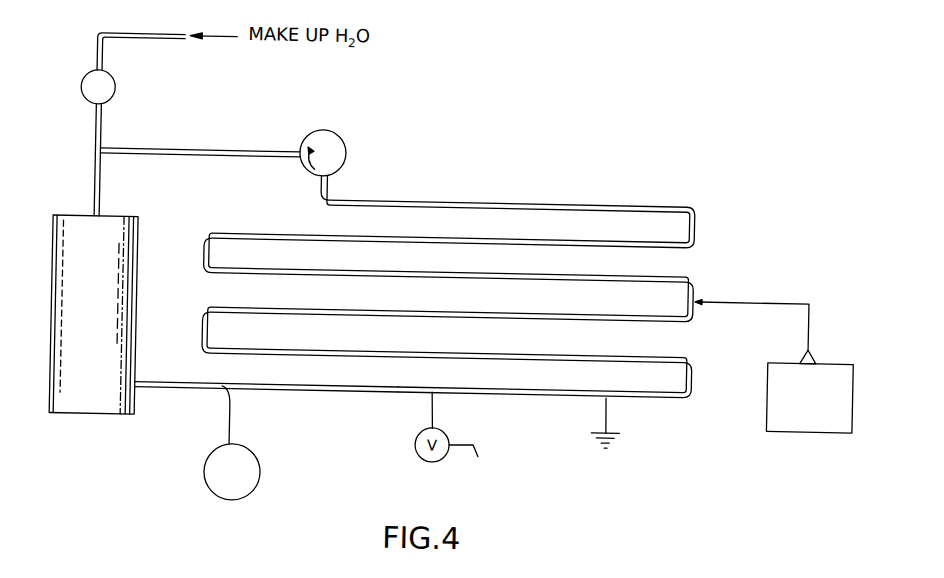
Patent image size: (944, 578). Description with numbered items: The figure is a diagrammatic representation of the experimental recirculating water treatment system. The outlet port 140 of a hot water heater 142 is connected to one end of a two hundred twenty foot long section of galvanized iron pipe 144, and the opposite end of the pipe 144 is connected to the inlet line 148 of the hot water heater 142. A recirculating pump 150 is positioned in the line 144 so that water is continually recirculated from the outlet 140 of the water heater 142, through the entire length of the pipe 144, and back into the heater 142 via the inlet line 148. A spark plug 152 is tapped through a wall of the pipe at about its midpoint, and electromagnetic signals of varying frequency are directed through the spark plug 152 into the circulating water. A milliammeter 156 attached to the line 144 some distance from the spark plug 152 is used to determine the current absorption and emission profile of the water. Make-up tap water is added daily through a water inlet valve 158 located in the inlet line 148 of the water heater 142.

The outlet port 140 is at (138, 396).
The hot water heater 142 is at (59, 223).
The galvanized iron pipe 144 is at (570, 203).
The inlet line 148 is at (98, 179).
The recirculating pump 150 is at (343, 155).
The spark plug 152 is at (700, 297).
The milliammeter 156 is at (236, 504).
The water inlet valve 158 is at (111, 90).